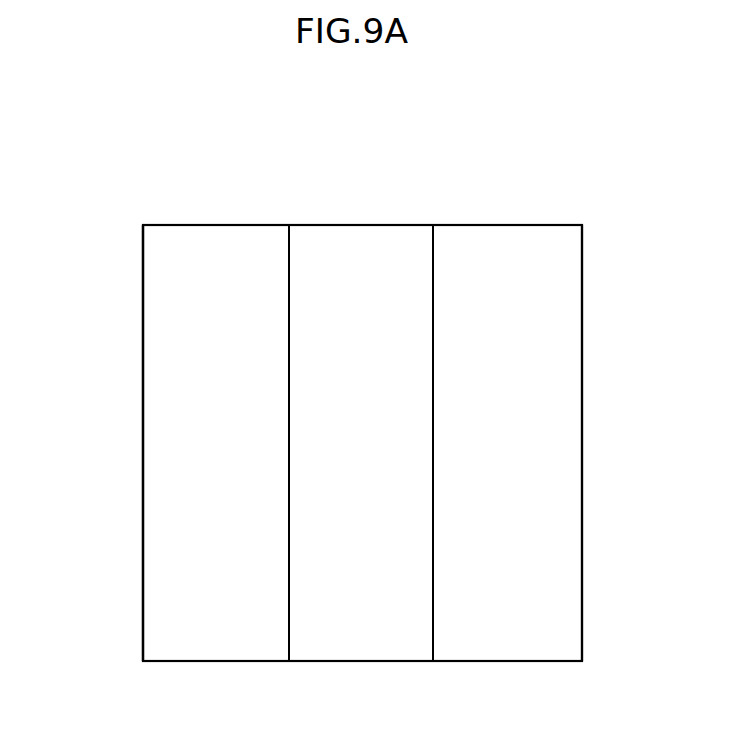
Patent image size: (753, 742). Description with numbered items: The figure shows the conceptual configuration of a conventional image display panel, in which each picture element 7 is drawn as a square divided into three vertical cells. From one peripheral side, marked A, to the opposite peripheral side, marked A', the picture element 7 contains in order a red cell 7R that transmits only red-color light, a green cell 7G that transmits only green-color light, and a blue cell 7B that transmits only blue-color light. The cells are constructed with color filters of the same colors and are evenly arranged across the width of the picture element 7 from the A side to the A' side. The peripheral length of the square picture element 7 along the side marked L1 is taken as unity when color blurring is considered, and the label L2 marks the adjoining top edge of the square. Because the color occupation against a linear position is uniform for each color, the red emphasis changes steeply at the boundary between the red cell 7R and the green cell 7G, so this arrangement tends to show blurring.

The picture element 7 is at (554, 185).
The red cell 7R is at (232, 460).
The green cell 7G is at (378, 460).
The blue cell 7B is at (523, 460).
The peripheral side A is at (92, 443).
The peripheral side A' is at (638, 443).
The peripheral length L1 is at (143, 583).
The side length L2 is at (356, 225).